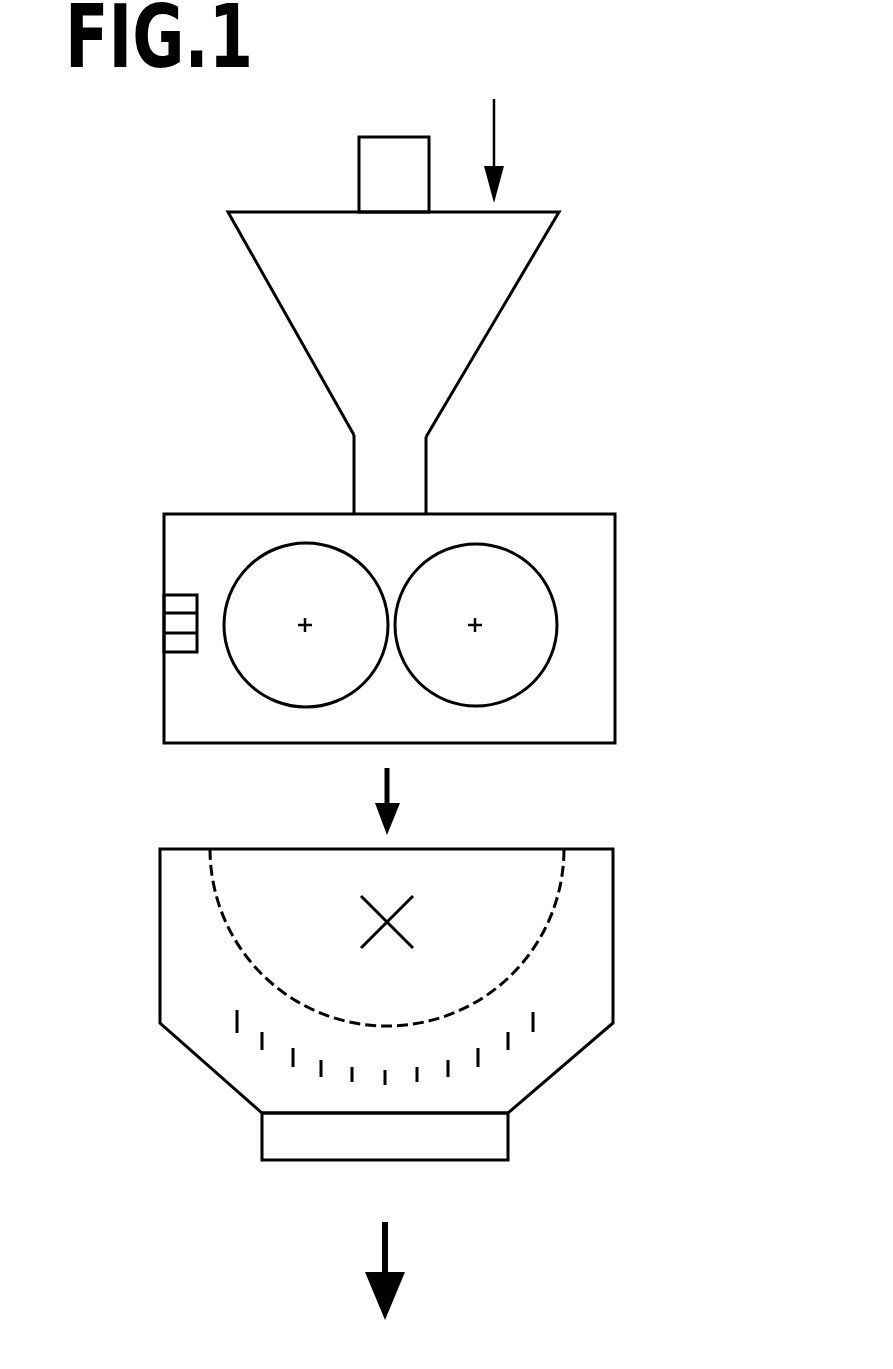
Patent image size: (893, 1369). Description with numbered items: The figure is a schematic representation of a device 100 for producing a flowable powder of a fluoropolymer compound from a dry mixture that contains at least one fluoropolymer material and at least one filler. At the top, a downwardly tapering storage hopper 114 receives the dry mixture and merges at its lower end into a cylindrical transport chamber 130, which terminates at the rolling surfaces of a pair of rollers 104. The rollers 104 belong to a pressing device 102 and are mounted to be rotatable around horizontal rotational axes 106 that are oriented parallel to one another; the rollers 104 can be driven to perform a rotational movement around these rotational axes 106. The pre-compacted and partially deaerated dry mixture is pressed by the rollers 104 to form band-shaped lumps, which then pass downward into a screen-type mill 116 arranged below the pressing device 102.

The device for producing a flowable powder 100 is at (618, 248).
The pressing device 102 is at (598, 548).
The rollers 104 is at (270, 684).
The rotational axes 106 is at (300, 621).
The storage hopper 114 is at (280, 274).
The screen-type mill 116 is at (628, 878).
The transport chamber 130 is at (408, 470).